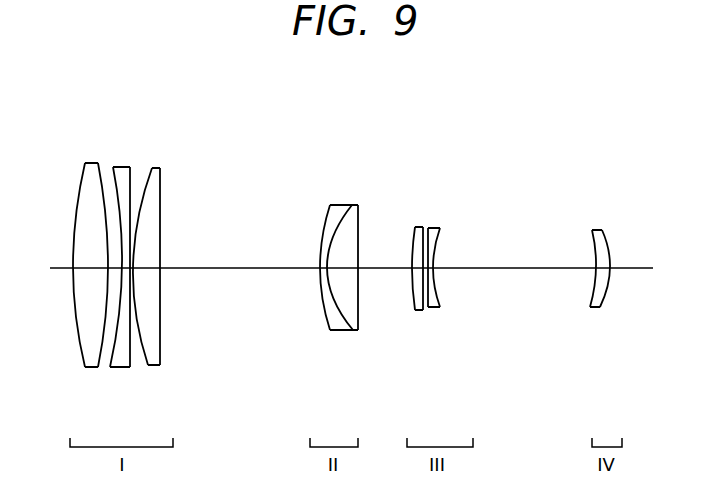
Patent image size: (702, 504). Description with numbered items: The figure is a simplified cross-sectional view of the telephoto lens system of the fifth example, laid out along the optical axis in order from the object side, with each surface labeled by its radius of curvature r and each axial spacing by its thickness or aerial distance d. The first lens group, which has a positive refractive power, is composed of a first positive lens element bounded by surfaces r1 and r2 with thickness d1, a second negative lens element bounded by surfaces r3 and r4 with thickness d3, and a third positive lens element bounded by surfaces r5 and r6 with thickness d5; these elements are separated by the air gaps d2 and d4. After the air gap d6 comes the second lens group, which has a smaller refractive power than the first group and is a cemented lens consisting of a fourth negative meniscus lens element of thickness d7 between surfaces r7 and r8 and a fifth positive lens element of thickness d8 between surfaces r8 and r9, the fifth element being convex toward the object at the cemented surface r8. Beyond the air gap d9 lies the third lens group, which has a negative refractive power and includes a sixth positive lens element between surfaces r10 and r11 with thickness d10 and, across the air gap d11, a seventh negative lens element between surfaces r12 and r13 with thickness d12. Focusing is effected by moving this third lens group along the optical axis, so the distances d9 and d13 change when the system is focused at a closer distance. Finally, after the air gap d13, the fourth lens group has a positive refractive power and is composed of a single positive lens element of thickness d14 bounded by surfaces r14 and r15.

The radius of curvature of first lens surface r1 is at (83, 178).
The radius of curvature of second lens surface r2 is at (112, 178).
The radius of curvature of third lens surface r3 is at (108, 180).
The radius of curvature of fourth lens surface r4 is at (135, 172).
The radius of curvature of fifth lens surface r5 is at (145, 178).
The radius of curvature of sixth lens surface r6 is at (162, 180).
The radius of curvature of seventh lens surface r7 is at (325, 218).
The radius of curvature of eighth lens surface r8 is at (340, 212).
The radius of curvature of ninth lens surface r9 is at (362, 212).
The radius of curvature of tenth lens surface r10 is at (413, 232).
The radius of curvature of eleventh lens surface r11 is at (420, 230).
The radius of curvature of twelfth lens surface r12 is at (428, 235).
The radius of curvature of thirteenth lens surface r13 is at (440, 245).
The radius of curvature of fourteenth lens surface r14 is at (592, 238).
The radius of curvature of fifteenth lens surface r15 is at (607, 238).
The thickness of first lens element d1 is at (92, 270).
The aerial distance between first and second lens elements d2 is at (113, 270).
The thickness of second lens element d3 is at (124, 270).
The aerial distance between second and third lens elements d4 is at (133, 272).
The thickness of third lens element d5 is at (135, 272).
The aerial distance between first and second lens groups d6 is at (245, 272).
The thickness of fourth lens element d7 is at (322, 280).
The thickness of fifth lens element d8 is at (343, 270).
The aerial distance between second and third lens groups d9 is at (382, 272).
The thickness of sixth lens element d10 is at (413, 275).
The aerial distance between sixth and seventh lens elements d11 is at (427, 275).
The thickness of seventh lens element d12 is at (435, 275).
The aerial distance between third and fourth lens groups d13 is at (522, 272).
The thickness of eighth lens element d14 is at (597, 310).